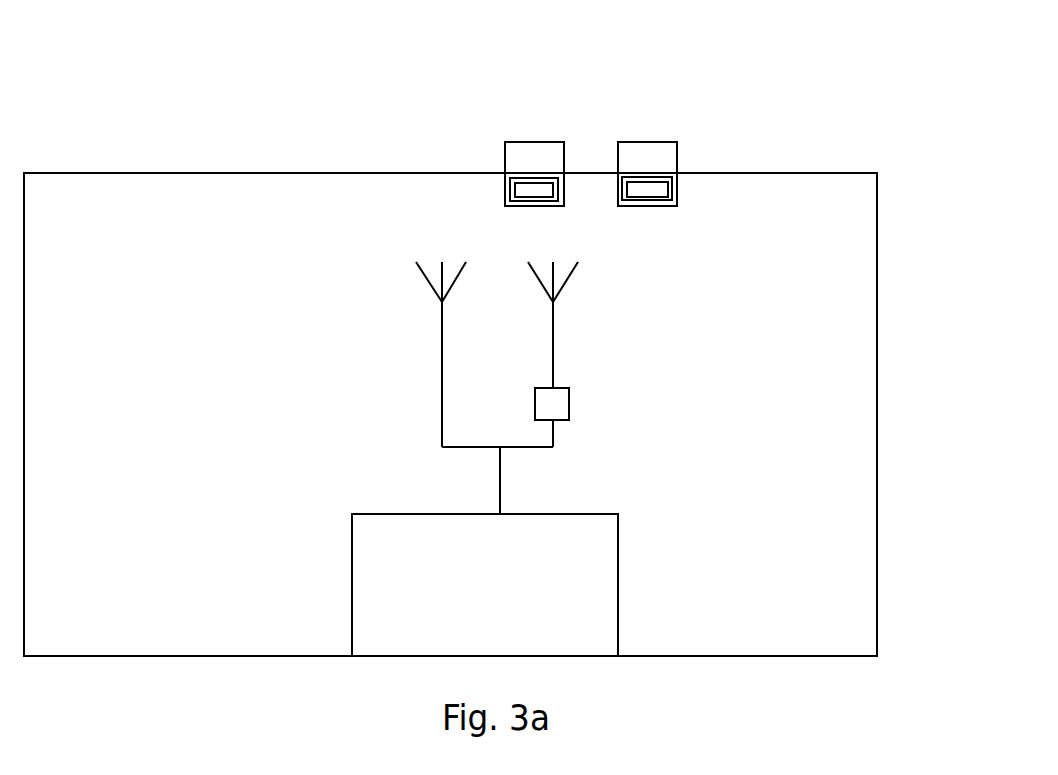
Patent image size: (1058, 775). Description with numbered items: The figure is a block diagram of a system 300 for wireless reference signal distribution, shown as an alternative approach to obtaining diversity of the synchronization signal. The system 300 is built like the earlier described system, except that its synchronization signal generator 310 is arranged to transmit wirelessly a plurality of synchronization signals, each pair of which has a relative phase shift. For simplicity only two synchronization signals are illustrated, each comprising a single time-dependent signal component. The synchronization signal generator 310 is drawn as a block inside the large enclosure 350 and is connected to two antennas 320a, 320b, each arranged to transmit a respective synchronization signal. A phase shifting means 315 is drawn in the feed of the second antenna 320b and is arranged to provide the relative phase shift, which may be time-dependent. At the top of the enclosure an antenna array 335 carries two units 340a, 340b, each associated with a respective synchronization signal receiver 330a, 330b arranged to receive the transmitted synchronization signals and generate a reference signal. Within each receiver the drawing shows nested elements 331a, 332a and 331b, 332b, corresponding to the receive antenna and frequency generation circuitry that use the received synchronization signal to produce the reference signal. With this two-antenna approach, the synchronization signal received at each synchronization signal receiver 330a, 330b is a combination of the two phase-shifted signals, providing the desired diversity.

The system 300 is at (315, 101).
The synchronization signal generator 310 is at (352, 557).
The phase shifting means 315 is at (569, 400).
The antenna 320a is at (442, 343).
The antenna 320b is at (553, 337).
The synchronization signal receiver 330a is at (498, 128).
The synchronization signal receiver 330b is at (715, 159).
The first sensor element 331a is at (529, 178).
The second sensor element 331b is at (657, 177).
The first sensor electrode 332a is at (517, 178).
The second sensor electrode 332b is at (670, 178).
The sensor arrangement 335 is at (567, 59).
The first sensor window 340a is at (528, 142).
The second sensor window 340b is at (647, 142).
The housing surface 350 is at (800, 174).